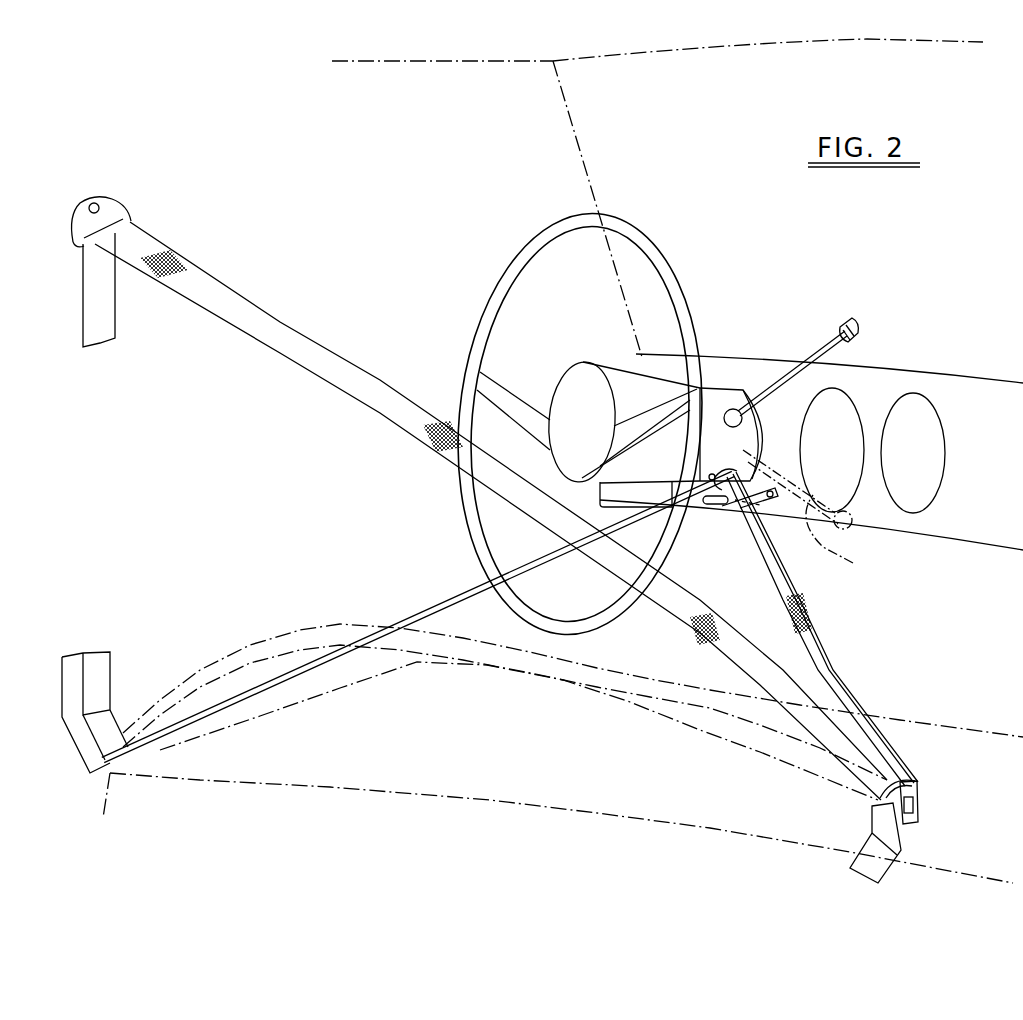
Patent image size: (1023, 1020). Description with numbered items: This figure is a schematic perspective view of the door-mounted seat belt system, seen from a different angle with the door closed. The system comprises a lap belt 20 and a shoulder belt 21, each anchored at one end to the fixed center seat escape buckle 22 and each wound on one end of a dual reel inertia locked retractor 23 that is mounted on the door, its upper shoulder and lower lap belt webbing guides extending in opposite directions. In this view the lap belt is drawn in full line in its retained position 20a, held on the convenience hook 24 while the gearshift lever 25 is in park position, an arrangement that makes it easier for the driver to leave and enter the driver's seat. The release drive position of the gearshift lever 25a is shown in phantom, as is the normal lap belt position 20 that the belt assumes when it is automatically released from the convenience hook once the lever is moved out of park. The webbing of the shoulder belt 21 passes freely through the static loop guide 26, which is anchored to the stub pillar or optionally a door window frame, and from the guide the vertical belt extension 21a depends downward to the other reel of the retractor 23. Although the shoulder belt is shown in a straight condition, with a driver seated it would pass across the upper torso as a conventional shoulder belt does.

The lap belt 20 is at (697, 735).
The lap belt retained position 20a is at (825, 662).
The shoulder belt 21 is at (322, 356).
The vertical belt extension 21a is at (110, 317).
The center seat escape buckle 22 is at (929, 826).
The dual reel inertia locked retractor 23 is at (127, 666).
The convenience hook 24 is at (712, 525).
The gearshift lever 25 is at (820, 355).
The gearshift lever release drive position 25a is at (821, 517).
The static loop guide 26 is at (146, 202).